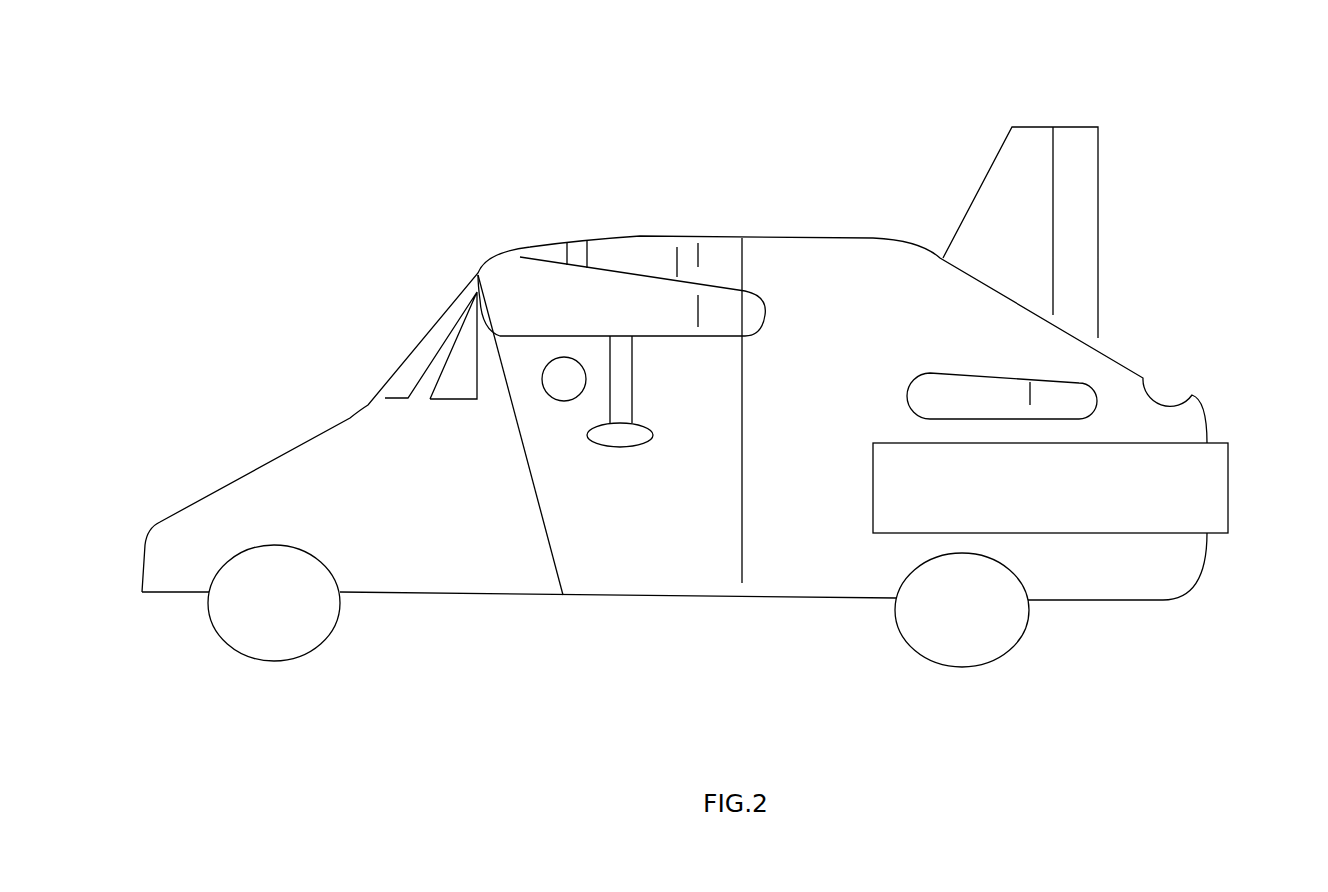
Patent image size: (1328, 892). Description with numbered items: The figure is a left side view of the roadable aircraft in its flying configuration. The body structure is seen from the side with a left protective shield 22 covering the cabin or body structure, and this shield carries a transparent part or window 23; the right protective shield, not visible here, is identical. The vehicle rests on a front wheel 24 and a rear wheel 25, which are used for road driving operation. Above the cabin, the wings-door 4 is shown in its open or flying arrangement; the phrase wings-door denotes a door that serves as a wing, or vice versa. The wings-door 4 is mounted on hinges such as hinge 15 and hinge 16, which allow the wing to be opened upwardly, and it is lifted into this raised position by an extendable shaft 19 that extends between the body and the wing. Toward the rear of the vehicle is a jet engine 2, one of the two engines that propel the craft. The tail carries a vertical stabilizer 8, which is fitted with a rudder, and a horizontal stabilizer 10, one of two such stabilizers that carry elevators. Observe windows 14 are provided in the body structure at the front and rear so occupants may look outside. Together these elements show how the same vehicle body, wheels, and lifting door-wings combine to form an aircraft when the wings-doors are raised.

The jet engine 2 is at (1205, 518).
The wings-door 4 is at (498, 288).
The vertical stabilizer 8 is at (1010, 203).
The horizontal stabilizer 10 is at (942, 403).
The observe windows 14 is at (432, 352).
The hinge 15 is at (567, 245).
The hinge 16 is at (698, 243).
The extendable shaft 19 is at (632, 360).
The left protective shield 22 is at (718, 447).
The transparent part or window 23 is at (565, 402).
The front wheel 24 is at (252, 645).
The rear wheel 25 is at (985, 652).